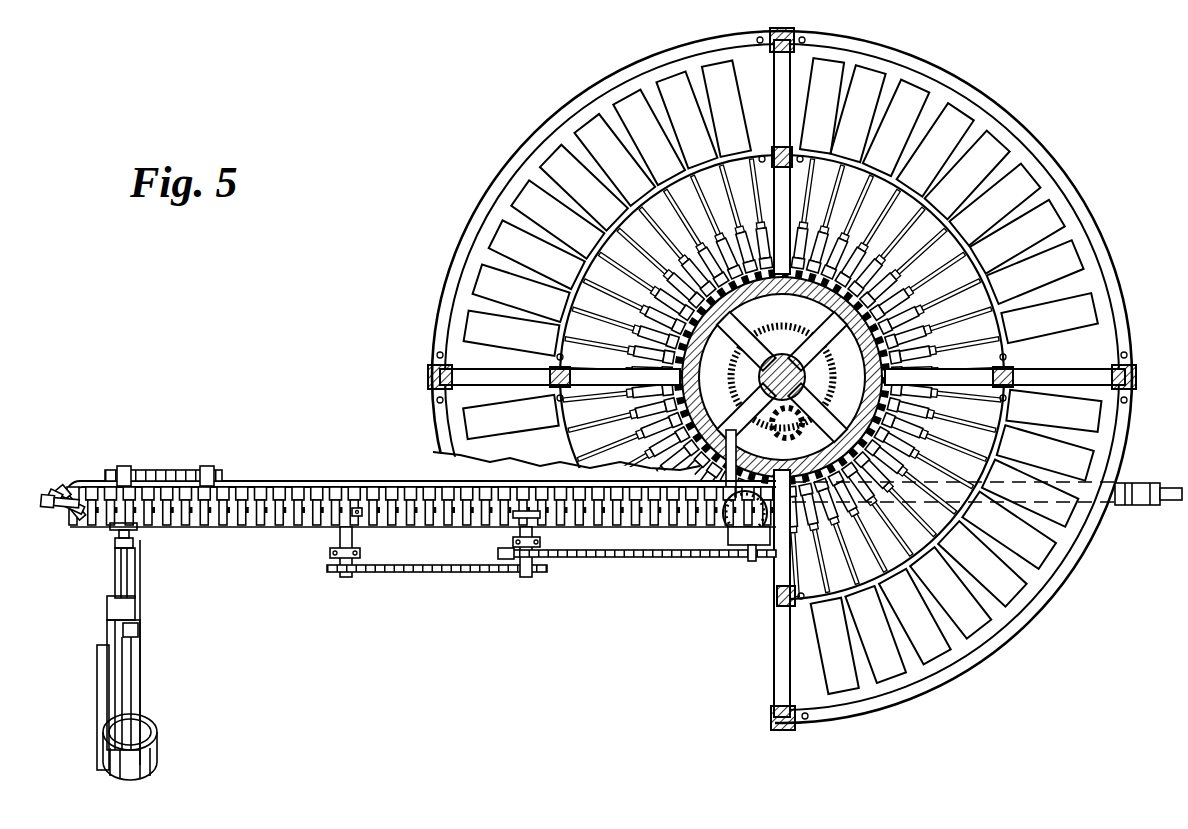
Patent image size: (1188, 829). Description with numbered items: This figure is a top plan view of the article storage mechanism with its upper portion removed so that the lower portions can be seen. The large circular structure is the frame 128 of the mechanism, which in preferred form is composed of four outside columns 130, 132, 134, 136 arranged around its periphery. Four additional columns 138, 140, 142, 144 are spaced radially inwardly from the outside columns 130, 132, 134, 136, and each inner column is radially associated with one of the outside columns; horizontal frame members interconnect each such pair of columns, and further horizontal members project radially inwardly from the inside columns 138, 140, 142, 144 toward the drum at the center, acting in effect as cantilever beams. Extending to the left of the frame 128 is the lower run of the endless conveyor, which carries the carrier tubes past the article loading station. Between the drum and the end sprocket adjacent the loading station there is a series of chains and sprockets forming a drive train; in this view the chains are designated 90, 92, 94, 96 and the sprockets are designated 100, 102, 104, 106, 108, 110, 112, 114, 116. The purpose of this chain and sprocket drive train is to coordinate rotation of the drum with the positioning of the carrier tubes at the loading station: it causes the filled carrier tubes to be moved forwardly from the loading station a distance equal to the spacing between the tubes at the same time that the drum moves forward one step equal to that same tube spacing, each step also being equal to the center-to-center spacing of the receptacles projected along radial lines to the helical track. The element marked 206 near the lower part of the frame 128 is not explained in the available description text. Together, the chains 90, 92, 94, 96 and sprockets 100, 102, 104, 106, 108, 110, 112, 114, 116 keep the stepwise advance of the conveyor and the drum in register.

The chain 90 is at (623, 558).
The chain 92 is at (436, 574).
The chain 94 is at (298, 525).
The chain 96 is at (166, 470).
The sprocket 100 is at (727, 537).
The sprocket 102 is at (750, 562).
The sprocket 104 is at (500, 552).
The sprocket 106 is at (545, 576).
The sprocket 108 is at (340, 576).
The sprocket 110 is at (364, 518).
The sprocket 112 is at (252, 525).
The sprocket 114 is at (207, 466).
The sprocket 116 is at (123, 466).
The frame 128 is at (432, 256).
The outside column 130 is at (426, 375).
The outside column 132 is at (794, 30).
The outside column 134 is at (1134, 364).
The outside column 136 is at (794, 731).
The inside column 138 is at (544, 368).
The inside column 140 is at (788, 148).
The inside column 142 is at (1012, 372).
The inside column 144 is at (793, 606).
The link member 206 is at (725, 478).